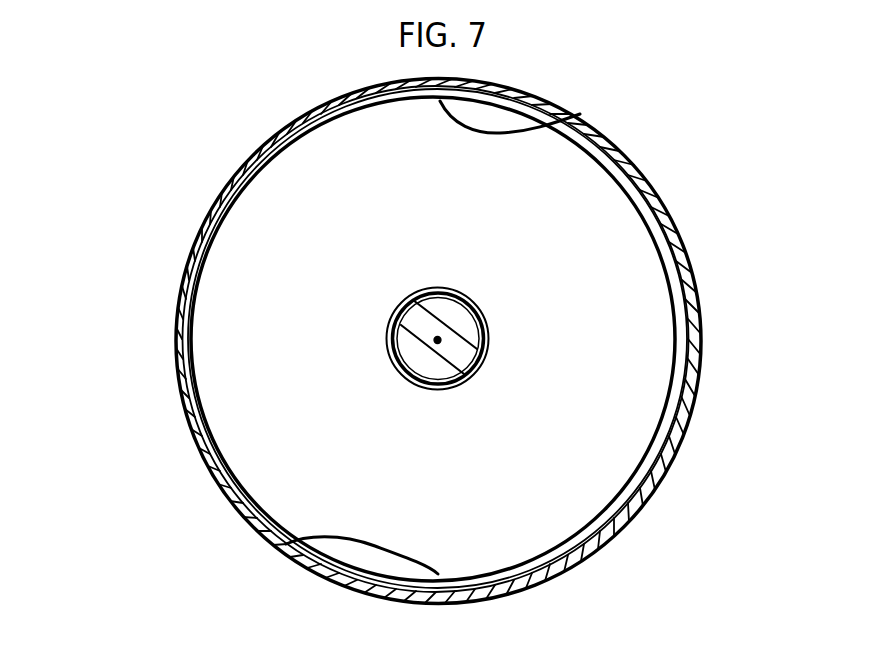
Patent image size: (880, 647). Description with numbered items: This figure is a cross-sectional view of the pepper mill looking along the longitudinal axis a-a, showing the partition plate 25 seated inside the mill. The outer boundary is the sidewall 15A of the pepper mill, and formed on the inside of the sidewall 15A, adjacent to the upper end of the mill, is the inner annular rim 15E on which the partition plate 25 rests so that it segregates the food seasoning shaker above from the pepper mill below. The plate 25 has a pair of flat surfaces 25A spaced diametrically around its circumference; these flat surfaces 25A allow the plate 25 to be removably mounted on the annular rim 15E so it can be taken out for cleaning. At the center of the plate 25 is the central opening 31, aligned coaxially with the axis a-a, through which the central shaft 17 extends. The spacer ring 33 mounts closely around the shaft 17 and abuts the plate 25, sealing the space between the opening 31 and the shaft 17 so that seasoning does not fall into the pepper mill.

The sidewall 15A is at (187, 297).
The inner annular rim 15E is at (200, 238).
The partition plate 25 is at (645, 252).
The flat surfaces 25A is at (572, 120).
The central opening 31 is at (480, 307).
The spacer ring 33 is at (483, 332).
The central shaft 17 is at (421, 318).
The longitudinal axis a-a is at (438, 341).